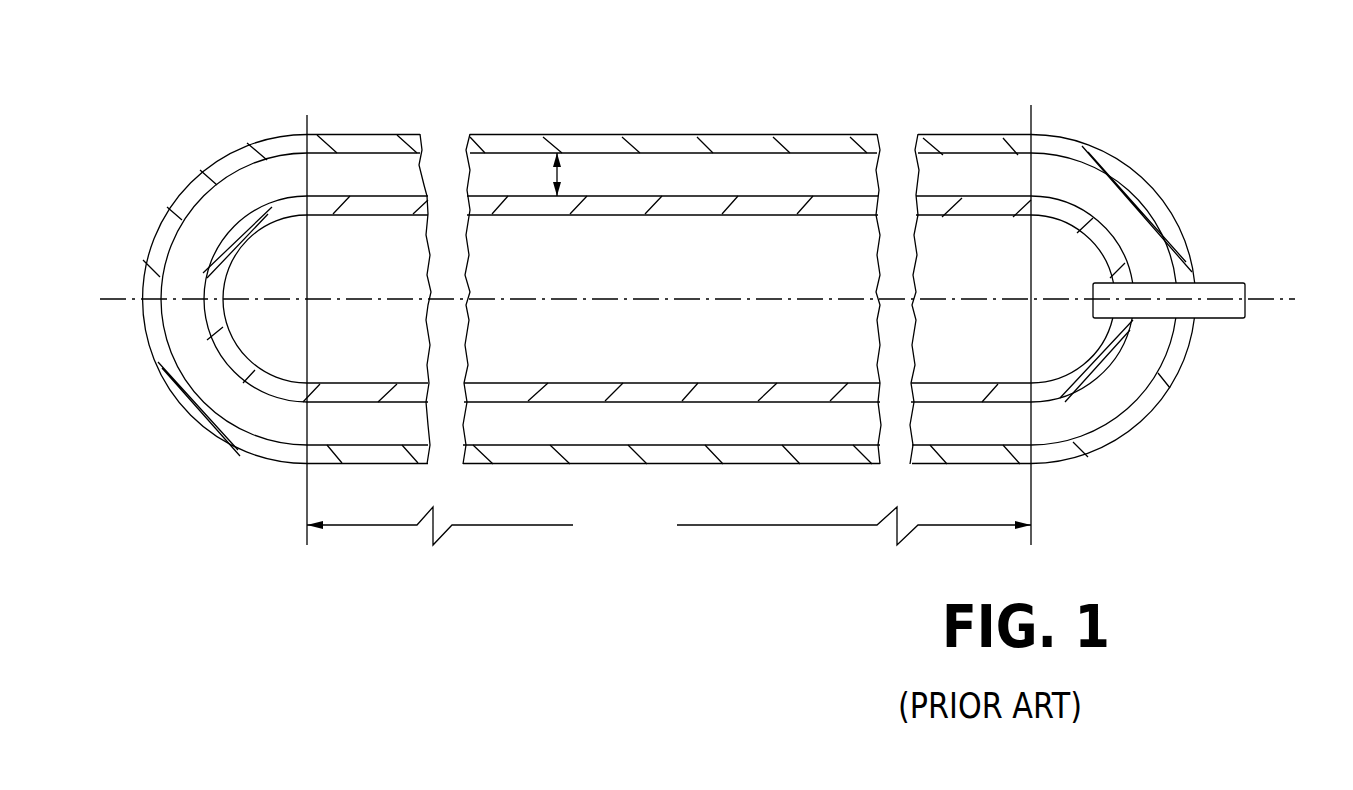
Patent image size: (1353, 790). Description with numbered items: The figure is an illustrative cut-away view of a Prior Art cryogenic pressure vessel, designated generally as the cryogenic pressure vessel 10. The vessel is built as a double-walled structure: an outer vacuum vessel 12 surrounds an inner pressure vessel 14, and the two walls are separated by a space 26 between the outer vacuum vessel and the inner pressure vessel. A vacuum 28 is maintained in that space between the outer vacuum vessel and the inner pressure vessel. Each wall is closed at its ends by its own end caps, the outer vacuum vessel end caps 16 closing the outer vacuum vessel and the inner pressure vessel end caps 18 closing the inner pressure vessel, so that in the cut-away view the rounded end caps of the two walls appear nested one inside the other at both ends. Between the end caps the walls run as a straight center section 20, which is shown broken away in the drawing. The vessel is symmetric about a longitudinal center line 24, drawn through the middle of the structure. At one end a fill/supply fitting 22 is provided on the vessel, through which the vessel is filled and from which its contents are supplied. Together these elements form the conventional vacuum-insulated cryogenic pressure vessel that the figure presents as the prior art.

The cryogenic pressure vessel 10 is at (978, 65).
The outer vacuum vessel 12 is at (669, 268).
The inner pressure vessel 14 is at (668, 237).
The outer vacuum vessel end caps 16 is at (696, 330).
The inner pressure vessel end caps 18 is at (665, 348).
The center section 20 is at (669, 525).
The fill/supply fitting 22 is at (1190, 257).
The center line 24 is at (697, 264).
The space between the outer vacuum vessel and the inner pressure vessel 26 is at (558, 164).
The vacuum in the space between the outer vacuum vessel and the inner pressure vesse 28 is at (603, 176).